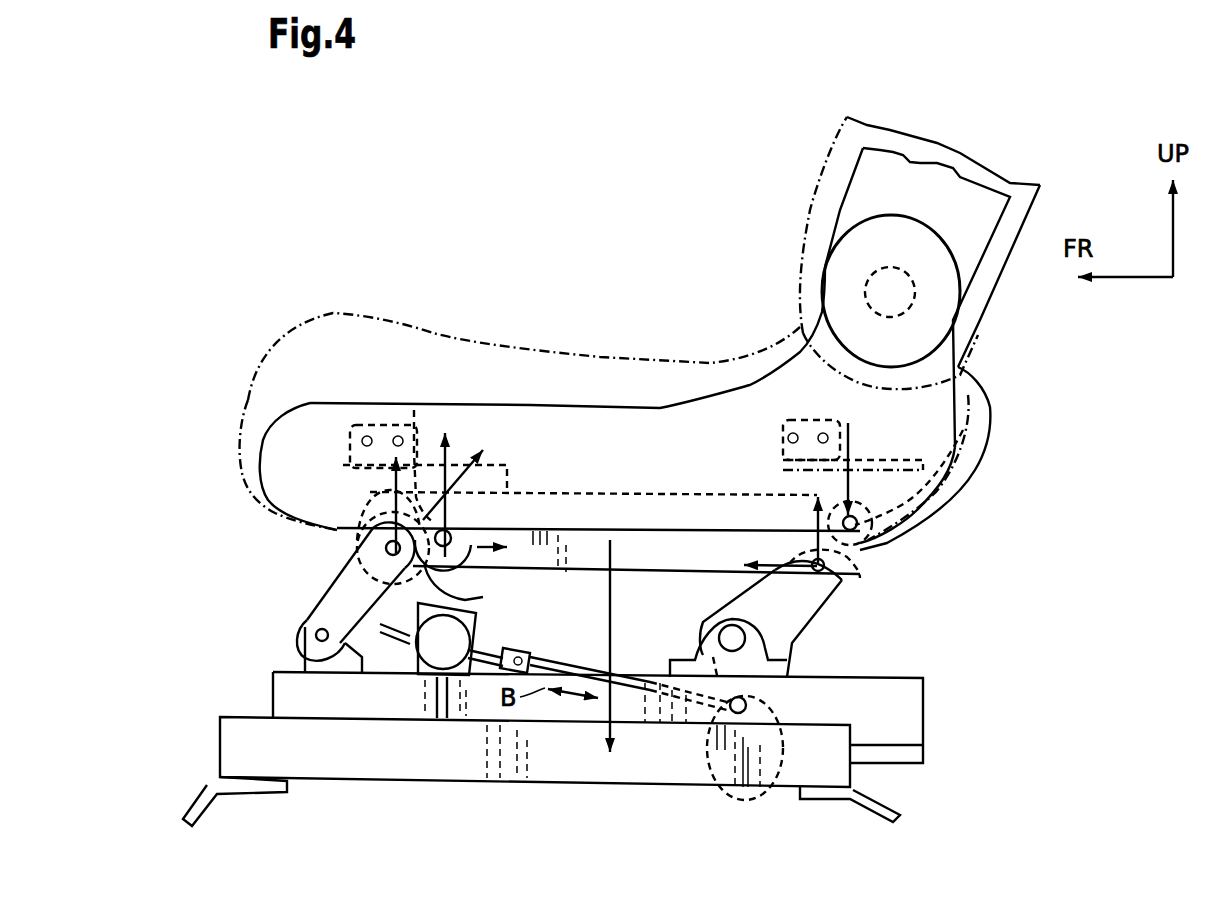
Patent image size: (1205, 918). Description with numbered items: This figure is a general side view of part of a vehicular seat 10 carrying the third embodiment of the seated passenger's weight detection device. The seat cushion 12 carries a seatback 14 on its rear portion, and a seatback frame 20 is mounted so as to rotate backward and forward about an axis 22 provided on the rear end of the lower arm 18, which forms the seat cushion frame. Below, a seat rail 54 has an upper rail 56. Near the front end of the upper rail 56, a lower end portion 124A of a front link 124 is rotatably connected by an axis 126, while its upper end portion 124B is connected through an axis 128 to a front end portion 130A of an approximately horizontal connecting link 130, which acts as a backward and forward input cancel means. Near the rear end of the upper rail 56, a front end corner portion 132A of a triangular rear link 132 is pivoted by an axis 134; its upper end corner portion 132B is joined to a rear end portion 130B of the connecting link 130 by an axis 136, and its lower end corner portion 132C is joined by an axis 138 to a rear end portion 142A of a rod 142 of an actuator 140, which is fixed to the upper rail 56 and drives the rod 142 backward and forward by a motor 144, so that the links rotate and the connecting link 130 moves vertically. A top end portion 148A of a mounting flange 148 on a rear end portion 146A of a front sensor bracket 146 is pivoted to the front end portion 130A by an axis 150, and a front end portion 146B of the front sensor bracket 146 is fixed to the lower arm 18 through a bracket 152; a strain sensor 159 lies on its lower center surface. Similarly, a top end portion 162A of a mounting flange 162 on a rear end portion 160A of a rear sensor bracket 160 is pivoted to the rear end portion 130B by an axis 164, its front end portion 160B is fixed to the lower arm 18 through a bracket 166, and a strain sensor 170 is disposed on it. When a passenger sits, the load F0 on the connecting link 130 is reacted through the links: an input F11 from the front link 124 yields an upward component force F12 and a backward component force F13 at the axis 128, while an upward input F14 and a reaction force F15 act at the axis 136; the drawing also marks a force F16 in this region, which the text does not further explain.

The vehicular seat 10 is at (727, 293).
The seat cushion 12 is at (565, 350).
The seatback 14 is at (797, 247).
The lower arm 18 is at (660, 403).
The seatback frame 20 is at (983, 270).
The axis 22 is at (913, 307).
The seat rail 54 is at (568, 789).
The upper rail 56 is at (410, 707).
The front link 124 is at (337, 577).
The lower end portion 124A is at (297, 623).
The upper end portion 124B is at (477, 597).
The axis 126 is at (290, 647).
The axis 128 is at (327, 586).
The connecting link 130 is at (645, 577).
The front end portion 130A is at (357, 530).
The rear end portion 130B is at (890, 557).
The rear link 132 is at (805, 630).
The front end corner portion 132A is at (703, 622).
The upper end corner portion 132B is at (863, 577).
The lower end corner portion 132C is at (773, 700).
The axis 134 is at (737, 637).
The axis 136 is at (837, 583).
The axis 138 is at (700, 783).
The actuator 140 is at (479, 631).
The rod 142 is at (587, 670).
The rear end portion 142A is at (790, 800).
The motor 144 is at (410, 670).
The front sensor bracket 146 is at (466, 458).
The rear end portion 146A is at (467, 525).
The front end portion 146B is at (309, 459).
The mounting flange 148 is at (478, 523).
The top end portion 148A is at (520, 570).
The axis 150 is at (438, 573).
The bracket 152 is at (370, 425).
The strain sensor 159 is at (431, 465).
The rear sensor bracket 160 is at (897, 450).
The rear end portion 160A is at (963, 430).
The front end portion 160B is at (777, 460).
The mounting flange 162 is at (932, 517).
The top end portion 162A is at (950, 497).
The axis 164 is at (815, 494).
The bracket 166 is at (807, 420).
The strain sensor 170 is at (893, 452).
The load F0 is at (612, 633).
The input F11 is at (409, 465).
The upward component force F12 is at (370, 493).
The backward component force F13 is at (600, 528).
The upward input F14 is at (805, 515).
The reaction force F15 is at (760, 565).
The reaction force F16 is at (503, 515).